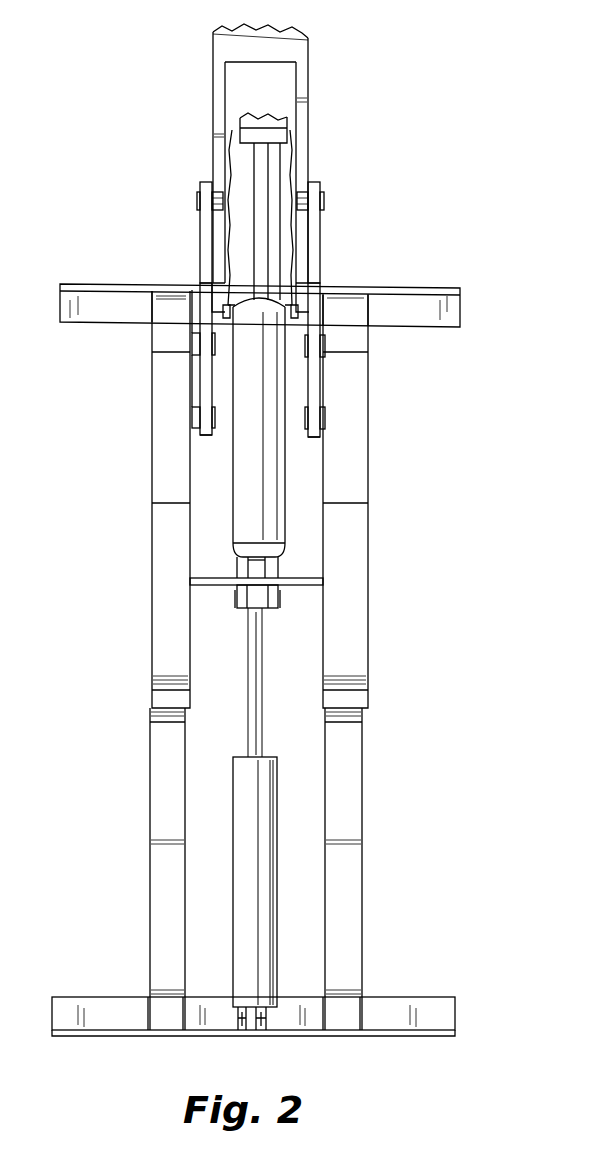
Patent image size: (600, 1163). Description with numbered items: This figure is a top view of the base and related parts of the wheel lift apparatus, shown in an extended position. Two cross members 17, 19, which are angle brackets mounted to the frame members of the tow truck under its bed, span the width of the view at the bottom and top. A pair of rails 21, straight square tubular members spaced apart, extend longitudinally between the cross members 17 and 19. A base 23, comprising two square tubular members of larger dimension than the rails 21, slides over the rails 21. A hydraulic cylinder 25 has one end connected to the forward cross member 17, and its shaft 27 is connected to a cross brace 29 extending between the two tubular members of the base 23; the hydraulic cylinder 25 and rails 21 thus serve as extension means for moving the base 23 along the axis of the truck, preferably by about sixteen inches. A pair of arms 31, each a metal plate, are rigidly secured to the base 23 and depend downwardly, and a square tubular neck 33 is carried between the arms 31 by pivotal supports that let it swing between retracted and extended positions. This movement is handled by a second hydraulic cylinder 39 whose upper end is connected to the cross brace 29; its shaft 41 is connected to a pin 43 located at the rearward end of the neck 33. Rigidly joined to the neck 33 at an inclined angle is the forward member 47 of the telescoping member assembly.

The cross member 17 is at (433, 1003).
The cross member 19 is at (460, 311).
The rails 21 is at (362, 826).
The base 23 is at (367, 573).
The hydraulic cylinder 25 is at (273, 941).
The shaft 27 is at (262, 729).
The cross brace 29 is at (305, 590).
The arms 31 is at (321, 243).
The neck 33 is at (297, 118).
The hydraulic cylinder 39 is at (285, 526).
The shaft 41 is at (268, 178).
The pin 43 is at (277, 136).
The forward member 47 is at (308, 58).